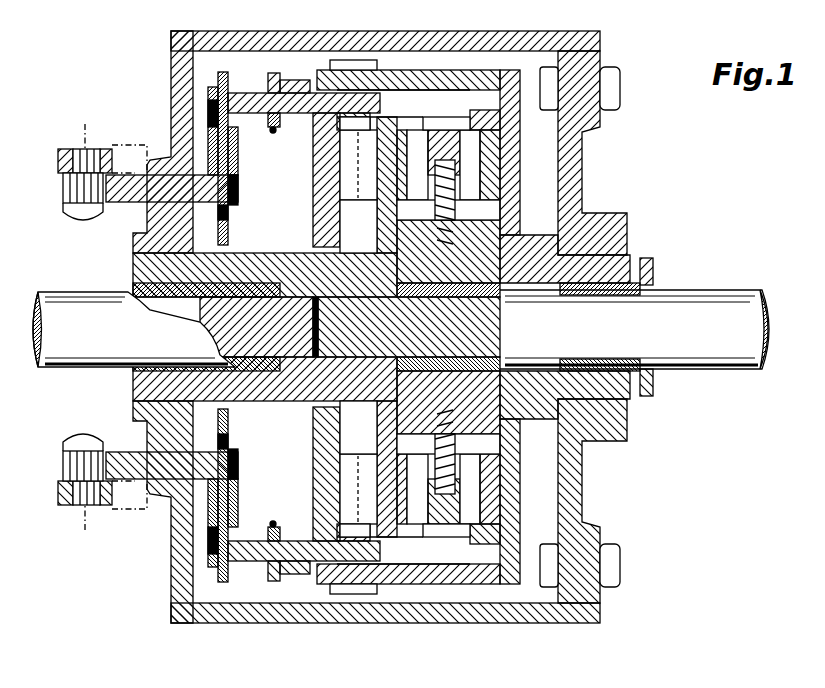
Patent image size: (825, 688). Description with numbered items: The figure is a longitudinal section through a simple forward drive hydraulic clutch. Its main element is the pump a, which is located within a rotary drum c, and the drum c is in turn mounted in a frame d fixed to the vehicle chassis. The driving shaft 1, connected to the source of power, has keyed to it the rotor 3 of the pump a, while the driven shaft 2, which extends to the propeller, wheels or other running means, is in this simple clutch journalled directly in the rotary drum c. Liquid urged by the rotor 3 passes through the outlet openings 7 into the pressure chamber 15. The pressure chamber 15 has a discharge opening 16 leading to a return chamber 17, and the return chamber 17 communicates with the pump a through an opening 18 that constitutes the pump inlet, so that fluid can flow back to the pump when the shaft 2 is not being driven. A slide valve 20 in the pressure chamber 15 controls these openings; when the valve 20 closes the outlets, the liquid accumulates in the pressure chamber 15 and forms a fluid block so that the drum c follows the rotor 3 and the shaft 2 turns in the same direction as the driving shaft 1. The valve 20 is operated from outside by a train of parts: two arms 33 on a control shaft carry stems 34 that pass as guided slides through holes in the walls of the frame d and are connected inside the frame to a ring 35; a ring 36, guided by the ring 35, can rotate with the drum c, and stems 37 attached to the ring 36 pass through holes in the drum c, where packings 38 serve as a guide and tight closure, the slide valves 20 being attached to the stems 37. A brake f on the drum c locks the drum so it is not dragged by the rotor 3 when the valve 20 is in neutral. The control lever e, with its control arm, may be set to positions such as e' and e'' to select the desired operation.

The driving shaft 1 is at (700, 300).
The driven shaft 2 is at (65, 292).
The rotor 3 is at (524, 228).
The outlet openings 7 is at (452, 125).
The pressure chamber 15 is at (440, 114).
The discharge opening 16 is at (376, 136).
The return chamber 17 is at (364, 225).
The opening 18 is at (373, 160).
The slide valve 20 is at (368, 115).
The arms 33 is at (58, 158).
The stems 34 is at (122, 204).
The ring 35 is at (239, 168).
The ring 36 is at (225, 72).
The stems 37 is at (271, 130).
The packings 38 is at (273, 74).
The pump a is at (512, 185).
The rotary drum c is at (432, 70).
The frame d is at (533, 34).
The control lever e is at (66, 348).
The lever position e' is at (81, 327).
The lever position e'' is at (129, 327).
The brake f is at (348, 60).